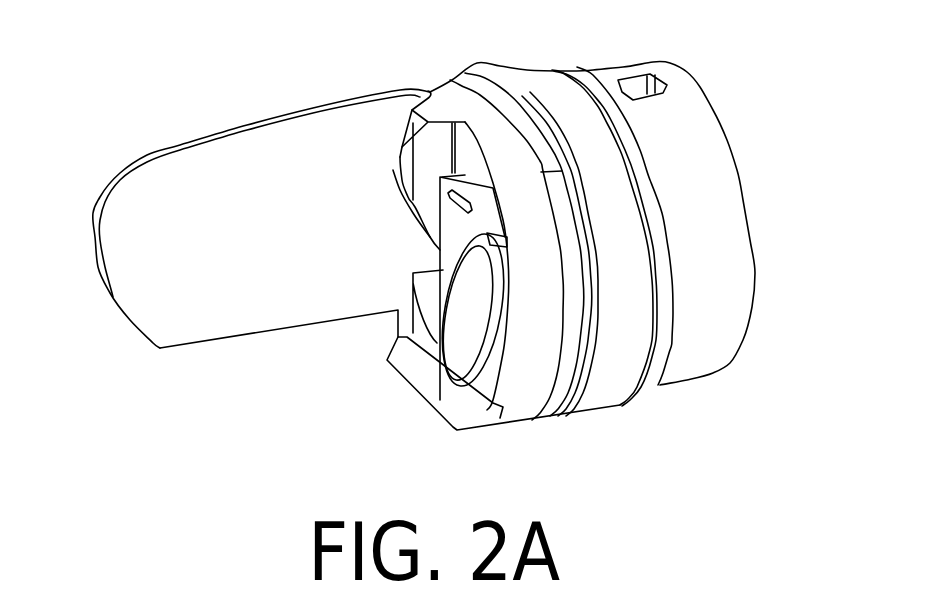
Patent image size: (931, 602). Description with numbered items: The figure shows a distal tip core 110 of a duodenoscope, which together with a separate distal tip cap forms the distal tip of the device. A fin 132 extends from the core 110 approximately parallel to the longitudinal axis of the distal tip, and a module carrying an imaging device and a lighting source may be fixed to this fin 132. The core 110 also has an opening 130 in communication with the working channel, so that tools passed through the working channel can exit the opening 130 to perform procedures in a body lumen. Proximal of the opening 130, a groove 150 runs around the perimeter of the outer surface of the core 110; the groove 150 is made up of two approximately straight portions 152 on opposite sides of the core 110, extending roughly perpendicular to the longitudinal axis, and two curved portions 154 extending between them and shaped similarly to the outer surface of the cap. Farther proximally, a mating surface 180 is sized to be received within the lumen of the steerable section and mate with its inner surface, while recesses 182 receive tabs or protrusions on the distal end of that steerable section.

The distal tip core 110 is at (439, 240).
The opening 130 is at (480, 343).
The fin 132 is at (153, 293).
The groove 150 is at (629, 272).
The straight portions 152 is at (545, 163).
The curved portions 154 is at (570, 340).
The mating surface 180 is at (635, 194).
The recesses 182 is at (638, 86).